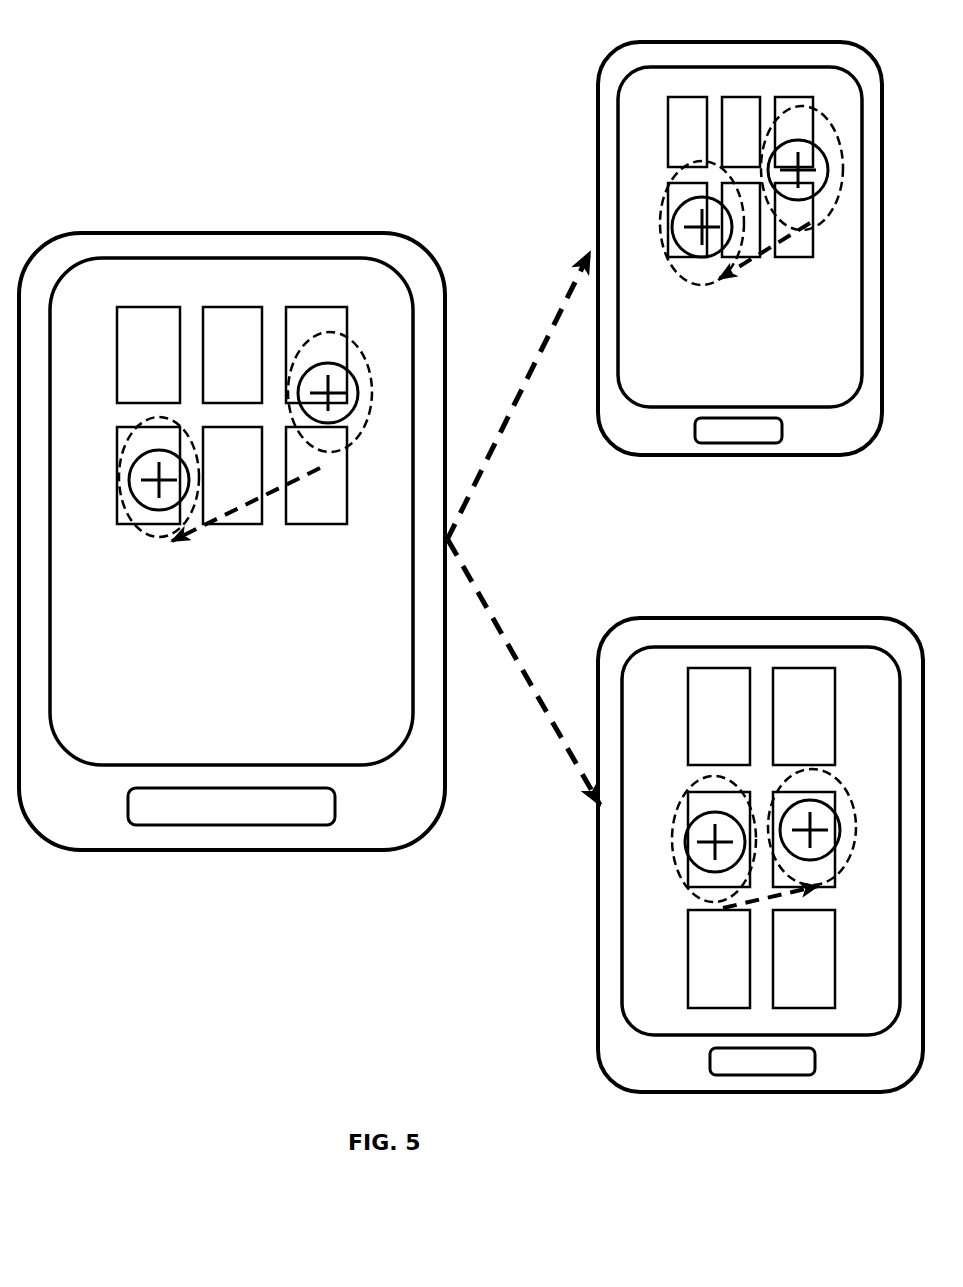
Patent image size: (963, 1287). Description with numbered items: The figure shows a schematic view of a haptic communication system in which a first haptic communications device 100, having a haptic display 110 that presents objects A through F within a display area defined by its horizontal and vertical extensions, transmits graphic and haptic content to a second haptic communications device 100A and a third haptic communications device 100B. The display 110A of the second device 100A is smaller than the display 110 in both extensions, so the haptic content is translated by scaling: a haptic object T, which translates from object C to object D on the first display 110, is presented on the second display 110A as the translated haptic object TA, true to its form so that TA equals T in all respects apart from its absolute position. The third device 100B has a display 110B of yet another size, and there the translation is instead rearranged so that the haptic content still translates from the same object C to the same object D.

The haptic telecommunications device 100 is at (213, 850).
The haptic presentation device 110 is at (83, 760).
The second haptic communications device 100A is at (770, 455).
The display of the second haptic device 110A is at (647, 407).
The third haptic communications device 100B is at (762, 1092).
The display of the third haptic device 110B is at (663, 1037).
The haptic object T is at (357, 340).
The translated haptic object TA is at (830, 127).